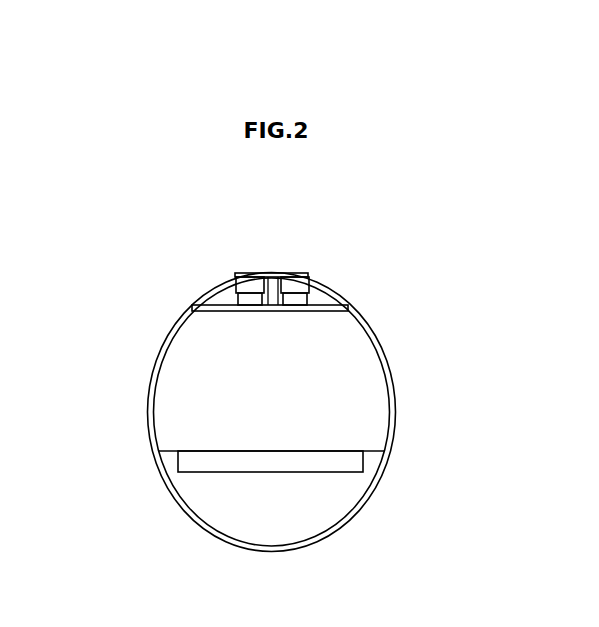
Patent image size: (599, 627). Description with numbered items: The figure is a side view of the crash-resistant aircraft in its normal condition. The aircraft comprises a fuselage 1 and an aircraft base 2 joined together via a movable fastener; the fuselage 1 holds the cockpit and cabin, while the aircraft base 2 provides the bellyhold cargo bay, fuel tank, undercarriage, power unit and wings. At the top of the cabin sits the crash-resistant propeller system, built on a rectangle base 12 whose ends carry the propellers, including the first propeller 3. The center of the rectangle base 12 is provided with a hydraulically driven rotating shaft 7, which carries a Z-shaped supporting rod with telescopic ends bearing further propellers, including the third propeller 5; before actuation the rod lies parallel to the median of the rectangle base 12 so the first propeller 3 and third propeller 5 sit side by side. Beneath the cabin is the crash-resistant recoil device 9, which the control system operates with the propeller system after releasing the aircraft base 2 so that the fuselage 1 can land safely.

The fuselage 1 is at (388, 361).
The aircraft base 2 is at (177, 502).
The first propeller 3 is at (305, 277).
The third propeller 5 is at (240, 277).
The rotating shaft 7 is at (273, 273).
The crash-resistant recoil device 9 is at (343, 462).
The rectangle base 12 is at (292, 311).